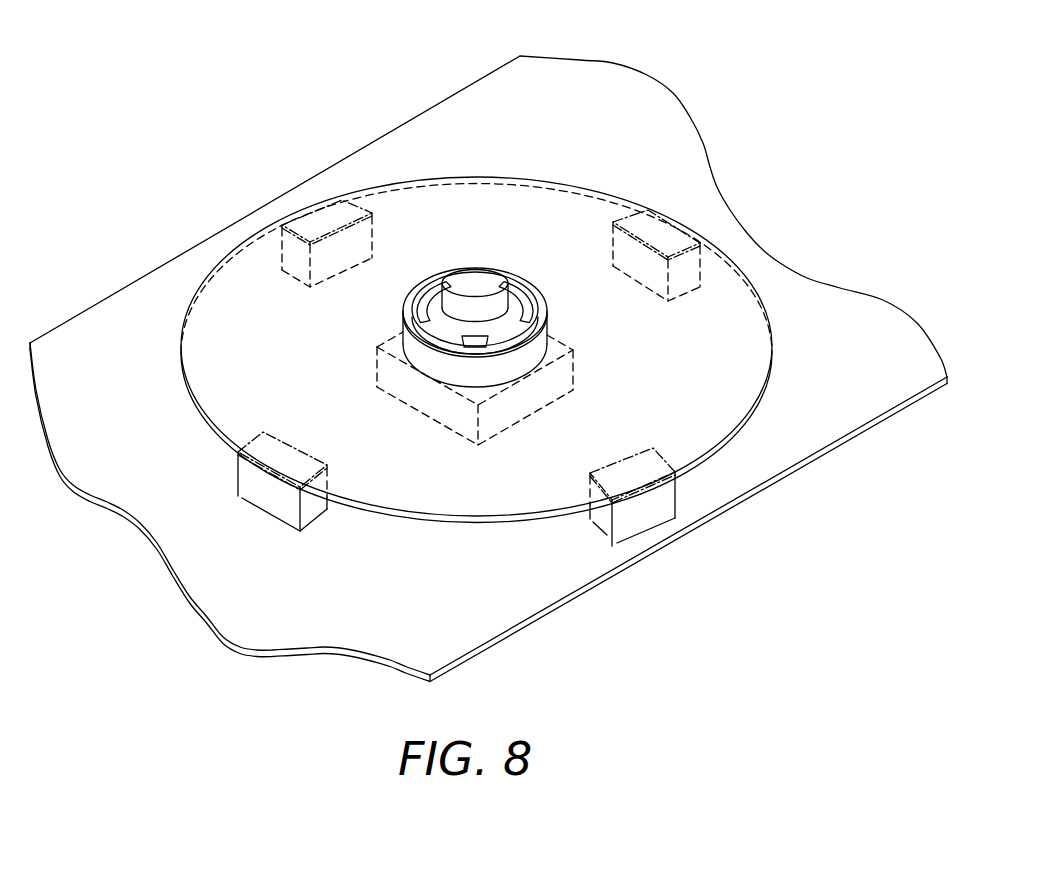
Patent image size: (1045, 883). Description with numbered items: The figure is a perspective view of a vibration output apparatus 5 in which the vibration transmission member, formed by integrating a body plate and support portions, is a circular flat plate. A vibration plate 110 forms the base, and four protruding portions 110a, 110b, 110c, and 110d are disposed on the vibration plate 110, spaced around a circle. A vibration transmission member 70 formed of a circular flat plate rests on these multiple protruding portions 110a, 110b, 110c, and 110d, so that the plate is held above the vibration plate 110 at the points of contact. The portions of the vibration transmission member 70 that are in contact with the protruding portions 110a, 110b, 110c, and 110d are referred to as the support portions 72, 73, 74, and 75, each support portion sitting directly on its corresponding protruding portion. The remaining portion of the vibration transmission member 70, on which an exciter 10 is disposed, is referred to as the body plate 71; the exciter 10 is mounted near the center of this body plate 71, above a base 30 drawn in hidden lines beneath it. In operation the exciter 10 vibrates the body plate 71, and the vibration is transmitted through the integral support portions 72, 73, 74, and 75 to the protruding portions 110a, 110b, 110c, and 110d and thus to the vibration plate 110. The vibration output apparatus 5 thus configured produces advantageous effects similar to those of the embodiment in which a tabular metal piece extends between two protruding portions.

The vibration output apparatus 5 is at (404, 176).
The exciter 10 is at (450, 268).
The base block 30 is at (527, 390).
The vibration transmission member 70 is at (586, 170).
The body plate 71 is at (747, 352).
The support portion 72 is at (636, 457).
The support portion 73 is at (282, 437).
The support portion 74 is at (321, 216).
The support portion 75 is at (660, 228).
The vibration plate 110 is at (458, 112).
The protruding portion 110a is at (665, 500).
The protruding portion 110b is at (305, 511).
The protruding portion 110c is at (284, 258).
The protruding portion 110d is at (688, 271).